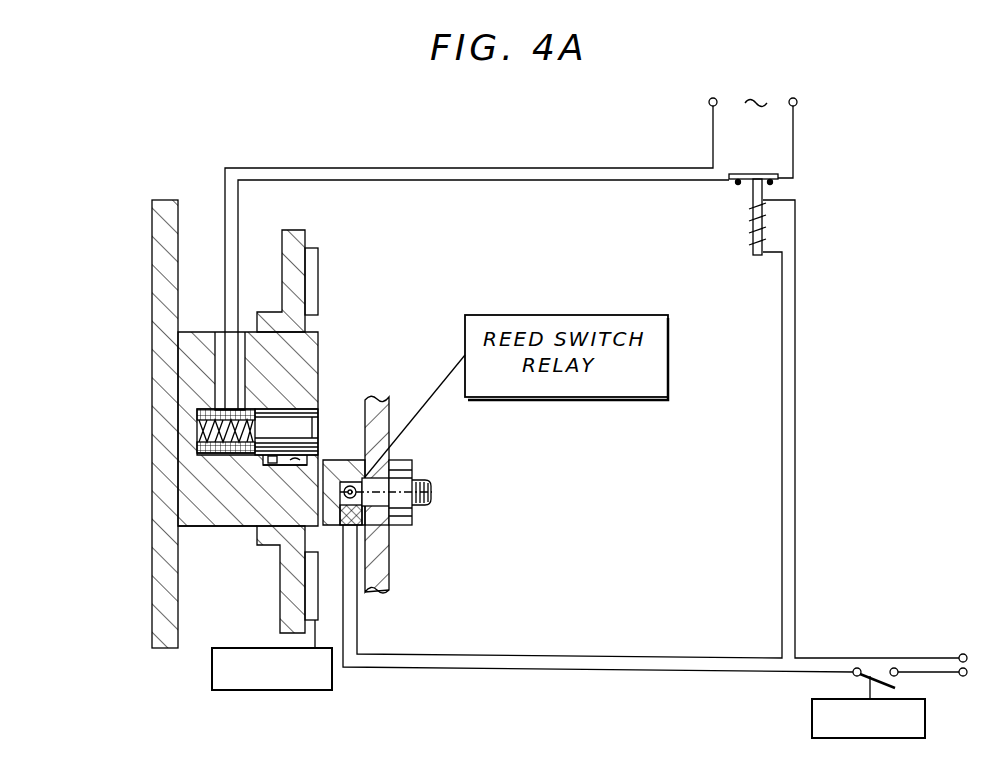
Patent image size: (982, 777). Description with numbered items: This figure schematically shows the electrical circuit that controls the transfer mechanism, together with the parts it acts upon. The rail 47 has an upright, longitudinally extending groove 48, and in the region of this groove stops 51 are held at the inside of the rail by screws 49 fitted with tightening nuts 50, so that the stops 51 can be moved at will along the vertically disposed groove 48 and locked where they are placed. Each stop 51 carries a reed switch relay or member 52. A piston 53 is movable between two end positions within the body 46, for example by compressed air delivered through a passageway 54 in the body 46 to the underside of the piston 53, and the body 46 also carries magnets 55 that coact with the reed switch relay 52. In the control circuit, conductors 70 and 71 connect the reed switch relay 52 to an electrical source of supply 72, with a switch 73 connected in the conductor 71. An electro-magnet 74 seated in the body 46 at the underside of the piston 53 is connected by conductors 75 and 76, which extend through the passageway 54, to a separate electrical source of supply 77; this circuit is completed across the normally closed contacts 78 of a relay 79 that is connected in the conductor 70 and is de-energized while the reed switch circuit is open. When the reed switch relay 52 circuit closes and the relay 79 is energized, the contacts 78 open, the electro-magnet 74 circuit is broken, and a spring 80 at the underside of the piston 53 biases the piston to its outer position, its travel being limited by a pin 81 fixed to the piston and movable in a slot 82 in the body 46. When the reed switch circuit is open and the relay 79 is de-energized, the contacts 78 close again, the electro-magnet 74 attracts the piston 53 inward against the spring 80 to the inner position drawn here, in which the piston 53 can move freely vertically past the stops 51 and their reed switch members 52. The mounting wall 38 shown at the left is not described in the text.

The wall panel 38 is at (160, 282).
The body 46 is at (215, 517).
The rail 47 is at (390, 580).
The groove 48 is at (400, 385).
The screws 49 is at (432, 503).
The tightening nuts 50 is at (403, 460).
The stops 51 is at (340, 460).
The reed switch relay 52 is at (388, 528).
The piston 53 is at (302, 418).
The passageway 54 is at (217, 337).
The magnets 55 is at (320, 258).
The conductor 70 is at (797, 535).
The conductor 71 is at (568, 673).
The electrical source of supply 72 is at (975, 661).
The switch 73 is at (883, 677).
The electro-magnet 74 is at (197, 412).
The conductor 75 is at (452, 168).
The conductor 76 is at (450, 183).
The electrical source of supply 77 is at (736, 82).
The normally closed contacts 78 is at (738, 186).
The relay 79 is at (752, 240).
The spring 80 is at (203, 455).
The pin 81 is at (267, 467).
The slot 82 is at (292, 467).